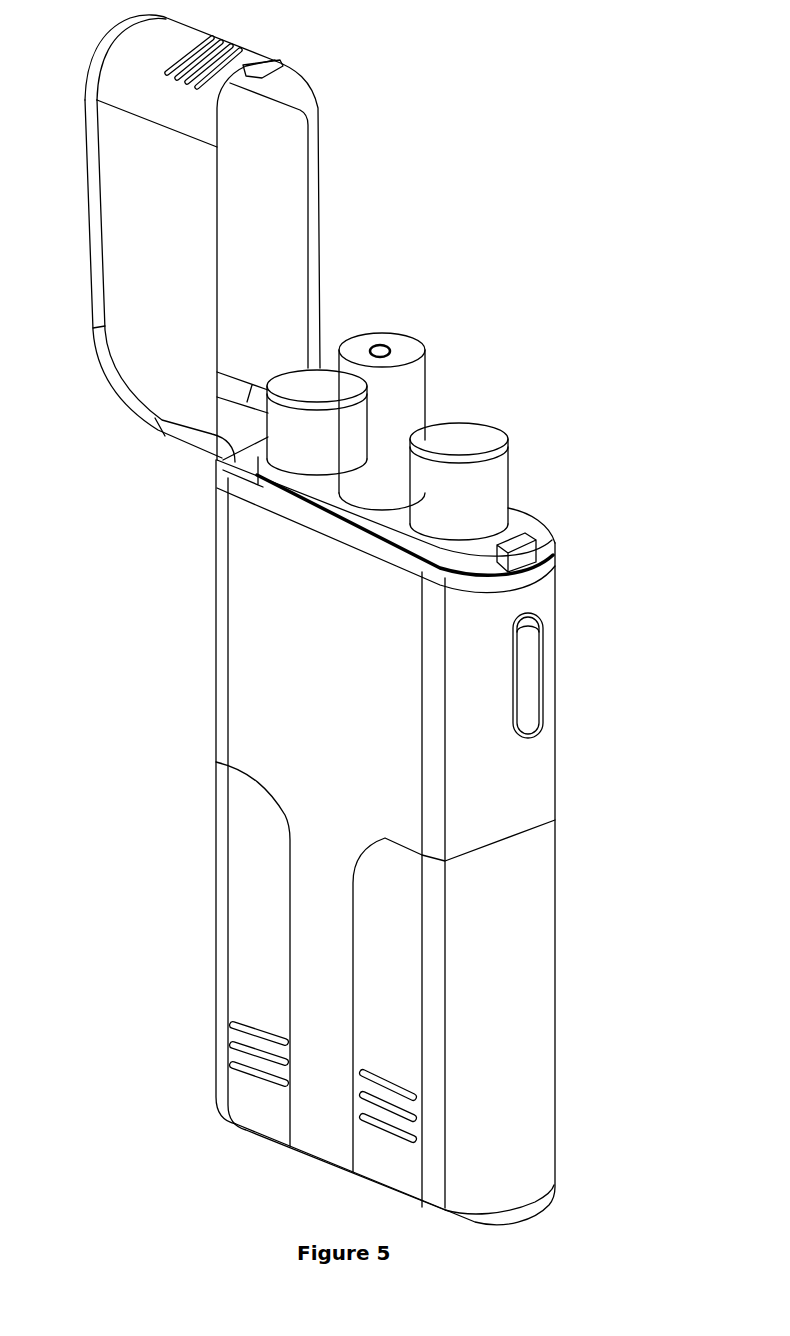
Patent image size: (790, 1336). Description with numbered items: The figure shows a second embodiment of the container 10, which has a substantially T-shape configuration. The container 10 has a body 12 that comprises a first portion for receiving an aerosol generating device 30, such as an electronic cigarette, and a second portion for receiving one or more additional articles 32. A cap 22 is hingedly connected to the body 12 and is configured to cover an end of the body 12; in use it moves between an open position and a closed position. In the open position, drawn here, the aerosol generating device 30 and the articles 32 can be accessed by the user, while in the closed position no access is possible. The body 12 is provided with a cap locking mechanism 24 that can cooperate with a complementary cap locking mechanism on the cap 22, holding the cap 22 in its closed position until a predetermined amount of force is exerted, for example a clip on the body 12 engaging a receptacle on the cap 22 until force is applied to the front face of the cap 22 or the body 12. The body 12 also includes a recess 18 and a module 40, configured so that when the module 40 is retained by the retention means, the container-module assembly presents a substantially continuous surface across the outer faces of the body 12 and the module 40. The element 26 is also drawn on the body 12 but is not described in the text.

The container 10 is at (617, 342).
The body 12 is at (558, 740).
The recess 18 is at (170, 839).
The cap 22 is at (318, 173).
The cap locking mechanism 24 is at (548, 540).
The slot 26 is at (543, 640).
The aerosol generating device 30 is at (332, 369).
The articles 32 is at (400, 333).
The module 40 is at (228, 946).